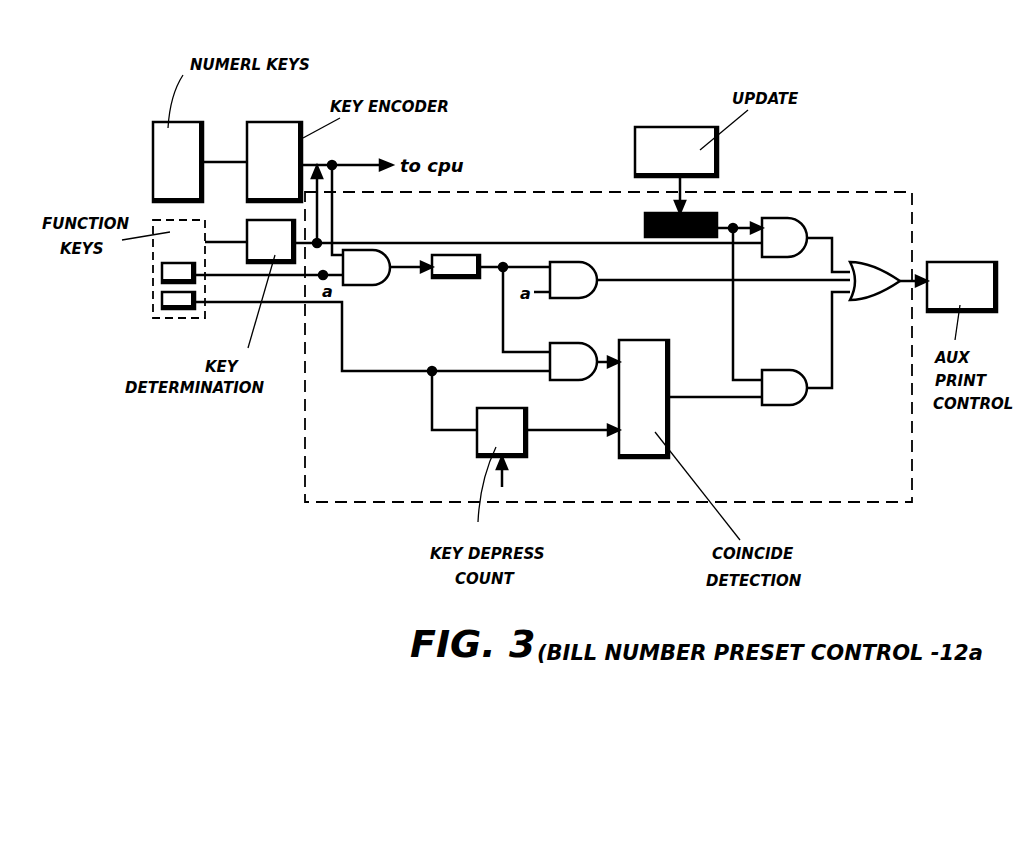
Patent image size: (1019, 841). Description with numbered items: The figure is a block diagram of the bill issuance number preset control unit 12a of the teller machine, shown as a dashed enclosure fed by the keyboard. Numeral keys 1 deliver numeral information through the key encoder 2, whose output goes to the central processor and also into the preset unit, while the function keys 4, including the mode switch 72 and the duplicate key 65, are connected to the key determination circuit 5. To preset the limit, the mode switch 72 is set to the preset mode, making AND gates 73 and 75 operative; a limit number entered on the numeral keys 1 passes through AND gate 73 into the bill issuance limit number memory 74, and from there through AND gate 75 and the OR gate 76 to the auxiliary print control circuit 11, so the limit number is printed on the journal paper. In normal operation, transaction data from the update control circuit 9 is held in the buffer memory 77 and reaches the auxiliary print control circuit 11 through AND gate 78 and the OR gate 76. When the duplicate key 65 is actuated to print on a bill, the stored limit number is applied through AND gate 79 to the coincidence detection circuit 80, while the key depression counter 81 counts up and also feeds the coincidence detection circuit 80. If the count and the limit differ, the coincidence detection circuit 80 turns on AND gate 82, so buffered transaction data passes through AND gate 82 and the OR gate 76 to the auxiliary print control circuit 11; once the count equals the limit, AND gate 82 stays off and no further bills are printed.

The numeral keys 1 is at (198, 121).
The key encoder 2 is at (277, 128).
The key determination circuit 5 is at (253, 232).
The function keys 4 is at (165, 253).
The mode switch 72 is at (160, 278).
The duplicate key 65 is at (160, 313).
The update control circuit 9 is at (668, 130).
The buffer memory 77 is at (645, 226).
The AND gate 78 is at (790, 222).
The auxiliary print control circuit 11 is at (960, 275).
The AND gate 73 is at (371, 278).
The bill issuance limit number memory 74 is at (460, 272).
The AND gate 75 is at (573, 290).
The AND gate 79 is at (568, 372).
The coincidence detection circuit 80 is at (648, 450).
The key depression counter 81 is at (472, 443).
The AND gate 82 is at (785, 400).
The OR gate 76 is at (875, 290).
The bill issuance number preset control unit 12a is at (320, 470).